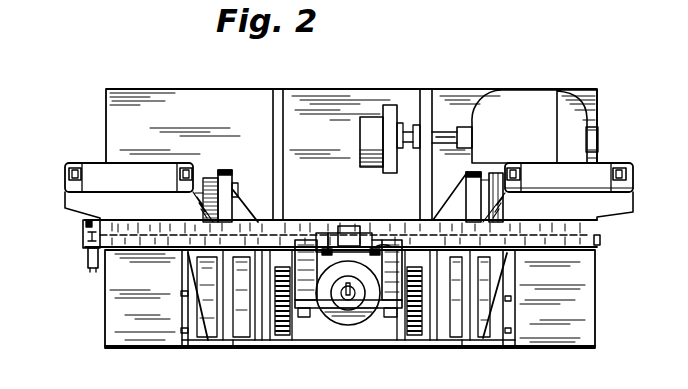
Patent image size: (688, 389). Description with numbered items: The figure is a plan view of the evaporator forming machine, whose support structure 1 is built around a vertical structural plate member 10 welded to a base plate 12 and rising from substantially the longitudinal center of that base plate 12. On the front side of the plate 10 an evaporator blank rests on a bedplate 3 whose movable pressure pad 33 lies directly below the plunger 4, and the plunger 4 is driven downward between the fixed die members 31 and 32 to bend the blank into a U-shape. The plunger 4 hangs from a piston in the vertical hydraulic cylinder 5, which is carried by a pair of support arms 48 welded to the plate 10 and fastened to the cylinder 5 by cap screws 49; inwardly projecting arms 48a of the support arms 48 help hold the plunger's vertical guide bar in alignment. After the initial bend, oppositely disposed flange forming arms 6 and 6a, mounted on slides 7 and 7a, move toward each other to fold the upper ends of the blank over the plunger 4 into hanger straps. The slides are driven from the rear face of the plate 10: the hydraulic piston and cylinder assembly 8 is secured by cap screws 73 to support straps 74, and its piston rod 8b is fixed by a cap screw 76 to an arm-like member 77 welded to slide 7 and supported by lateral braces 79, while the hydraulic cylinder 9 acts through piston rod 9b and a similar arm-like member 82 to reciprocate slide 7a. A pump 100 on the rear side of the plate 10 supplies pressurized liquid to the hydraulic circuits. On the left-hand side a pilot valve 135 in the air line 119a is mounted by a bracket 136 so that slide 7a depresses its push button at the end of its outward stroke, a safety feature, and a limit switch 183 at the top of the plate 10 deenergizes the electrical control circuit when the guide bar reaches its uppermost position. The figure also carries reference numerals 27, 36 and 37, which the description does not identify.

The support structure 1 is at (600, 263).
The bedplate 3 is at (283, 341).
The plunger 4 is at (310, 341).
The vertical hydraulic cylinder 5 is at (349, 330).
The flange forming arm 6 is at (465, 338).
The flange forming arm 6a is at (238, 350).
The slide 7 is at (601, 238).
The slide 7a is at (91, 259).
The hydraulic piston and cylinder assembly 8 is at (640, 161).
The piston rod 8b is at (485, 176).
The hydraulic cylinder 9 is at (65, 157).
The piston rod 9b is at (214, 186).
The vertical structural plate member 10 is at (153, 227).
The base plate 12 is at (580, 315).
The partition wall 27 is at (277, 106).
The fixed die member 31 is at (200, 348).
The fixed die member 32 is at (485, 338).
The movable pressure pad 33 is at (322, 249).
The vertical strut 36 is at (508, 297).
The frame column 37 is at (187, 348).
The support arms 48 is at (361, 273).
The inwardly projecting arms 48a is at (325, 249).
The cap screws 49 is at (347, 323).
The cap screws 73 is at (634, 176).
The support straps 74 is at (631, 193).
The cap screw 76 is at (467, 185).
The arm-like member 77 is at (463, 180).
The lateral braces 79 is at (458, 210).
The arm-like member 82 is at (252, 184).
The pump 100 is at (361, 132).
The air line 119a is at (92, 268).
The pilot valve 135 is at (88, 238).
The bracket 136 is at (86, 223).
The limit switch 183 is at (352, 227).